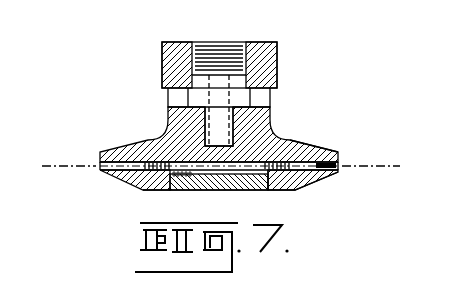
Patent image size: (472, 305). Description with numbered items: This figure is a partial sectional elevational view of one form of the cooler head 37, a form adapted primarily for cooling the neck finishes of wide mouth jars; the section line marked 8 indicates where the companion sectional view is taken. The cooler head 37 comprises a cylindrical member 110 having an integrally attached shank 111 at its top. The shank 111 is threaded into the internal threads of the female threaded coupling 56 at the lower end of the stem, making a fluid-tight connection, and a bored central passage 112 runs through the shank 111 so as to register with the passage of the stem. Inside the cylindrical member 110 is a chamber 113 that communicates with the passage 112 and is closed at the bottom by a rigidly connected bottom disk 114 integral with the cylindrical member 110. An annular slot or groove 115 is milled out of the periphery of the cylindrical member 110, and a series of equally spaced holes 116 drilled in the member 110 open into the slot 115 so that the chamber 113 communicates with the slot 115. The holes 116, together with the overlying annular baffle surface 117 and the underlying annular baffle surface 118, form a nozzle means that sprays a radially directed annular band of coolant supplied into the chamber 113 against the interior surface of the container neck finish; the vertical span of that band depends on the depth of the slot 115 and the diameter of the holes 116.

The cooler head 37 is at (300, 106).
The female threaded coupling 56 is at (268, 58).
The cylindrical member 110 is at (303, 137).
The shank 111 is at (172, 100).
The bored central passage 112 is at (168, 118).
The chamber 113 is at (255, 162).
The bottom disk 114 is at (222, 176).
The annular slot 115 is at (338, 172).
The holes 116 is at (303, 171).
The overlying annular baffle surface 117 is at (313, 150).
The underlying annular baffle surface 118 is at (324, 180).
The section line 8- 8 is at (64, 190).